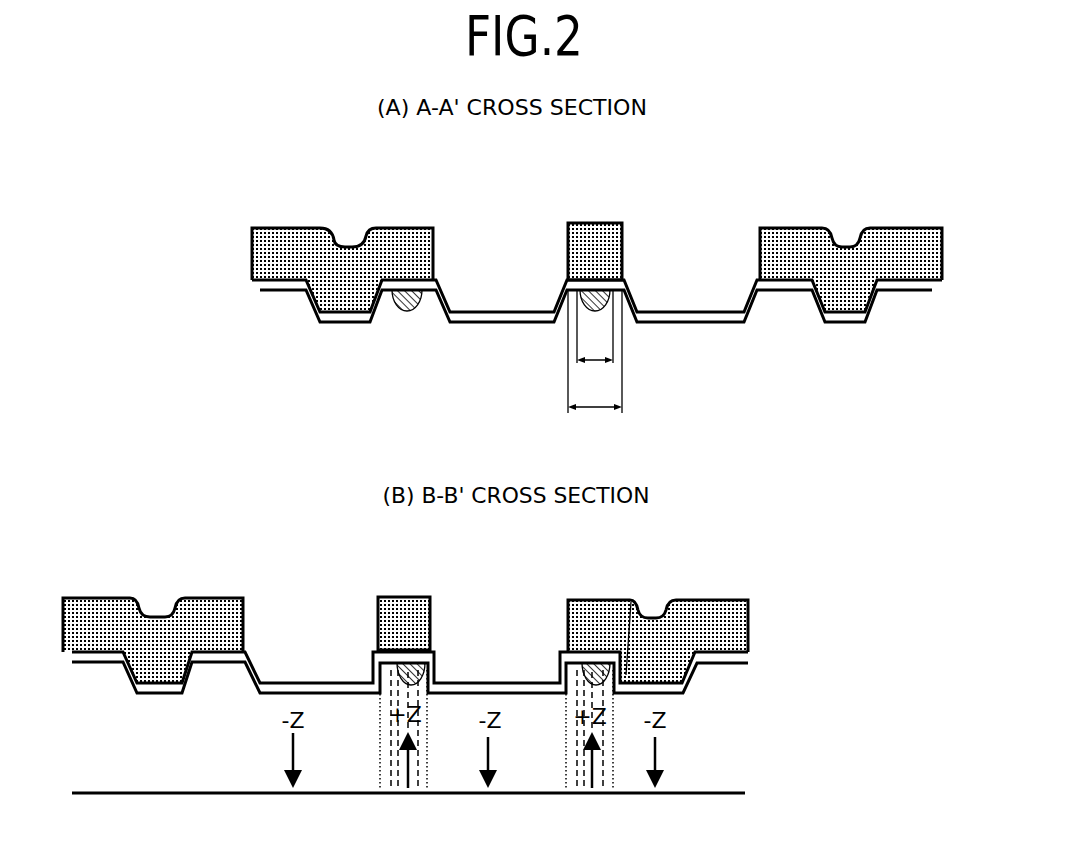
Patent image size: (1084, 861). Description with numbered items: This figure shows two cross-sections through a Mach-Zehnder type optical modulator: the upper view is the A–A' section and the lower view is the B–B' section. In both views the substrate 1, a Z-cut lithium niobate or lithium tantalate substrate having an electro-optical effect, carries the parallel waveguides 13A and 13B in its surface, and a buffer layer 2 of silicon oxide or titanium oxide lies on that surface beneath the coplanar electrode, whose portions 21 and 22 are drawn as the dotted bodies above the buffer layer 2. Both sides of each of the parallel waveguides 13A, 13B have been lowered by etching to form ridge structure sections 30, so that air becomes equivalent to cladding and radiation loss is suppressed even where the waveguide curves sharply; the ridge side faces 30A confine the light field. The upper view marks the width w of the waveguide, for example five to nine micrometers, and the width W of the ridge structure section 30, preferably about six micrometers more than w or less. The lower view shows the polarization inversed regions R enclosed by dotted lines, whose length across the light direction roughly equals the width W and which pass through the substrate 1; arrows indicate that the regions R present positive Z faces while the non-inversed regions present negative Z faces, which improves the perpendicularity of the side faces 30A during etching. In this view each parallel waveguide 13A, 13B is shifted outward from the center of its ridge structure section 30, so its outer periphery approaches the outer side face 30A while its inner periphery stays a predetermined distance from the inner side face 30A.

The substrate 1 is at (257, 336).
The buffer layer 2 is at (253, 283).
The parallel waveguide 13A is at (608, 307).
The parallel waveguide 13B is at (408, 313).
The signal electrode 21 is at (603, 223).
The ground electrode 22 is at (283, 228).
The ridge structure section 30 is at (408, 262).
The ridge side face 30A is at (370, 305).
The polarization inversed region R is at (430, 783).
The width of optical waveguide w is at (595, 326).
The width of ridge structure section W is at (595, 351).